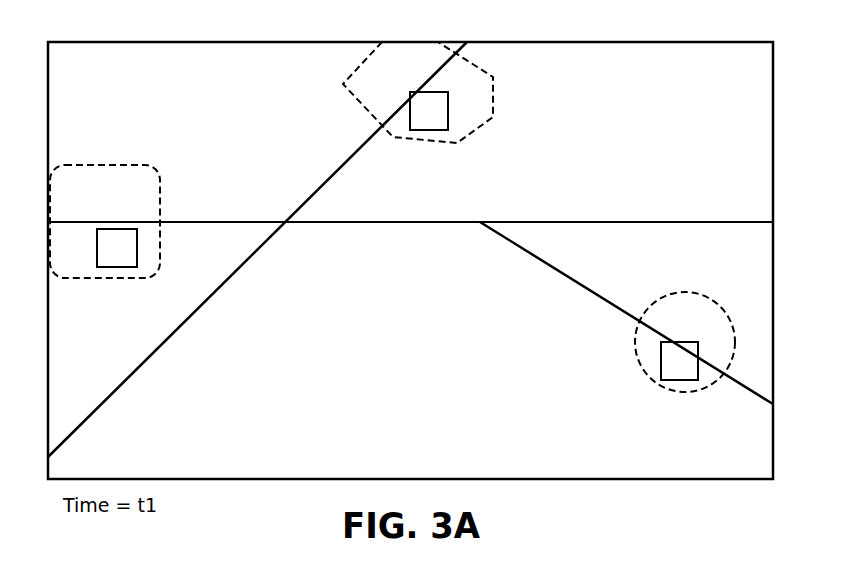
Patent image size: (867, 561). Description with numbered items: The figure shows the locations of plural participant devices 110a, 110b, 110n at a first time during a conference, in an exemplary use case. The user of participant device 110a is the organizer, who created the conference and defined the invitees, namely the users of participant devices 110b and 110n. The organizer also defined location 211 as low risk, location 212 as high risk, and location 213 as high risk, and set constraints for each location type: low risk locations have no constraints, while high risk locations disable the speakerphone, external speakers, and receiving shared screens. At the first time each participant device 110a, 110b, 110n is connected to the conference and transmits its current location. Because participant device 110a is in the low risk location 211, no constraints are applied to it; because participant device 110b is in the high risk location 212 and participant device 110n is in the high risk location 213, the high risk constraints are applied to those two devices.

The location 211 is at (118, 167).
The location 212 is at (493, 103).
The location 213 is at (672, 292).
The participant device 110a is at (108, 267).
The participant device 110b is at (423, 130).
The participant device 110n is at (672, 380).